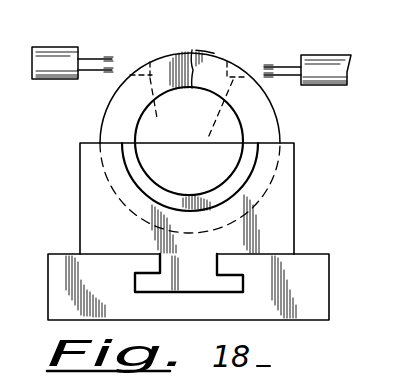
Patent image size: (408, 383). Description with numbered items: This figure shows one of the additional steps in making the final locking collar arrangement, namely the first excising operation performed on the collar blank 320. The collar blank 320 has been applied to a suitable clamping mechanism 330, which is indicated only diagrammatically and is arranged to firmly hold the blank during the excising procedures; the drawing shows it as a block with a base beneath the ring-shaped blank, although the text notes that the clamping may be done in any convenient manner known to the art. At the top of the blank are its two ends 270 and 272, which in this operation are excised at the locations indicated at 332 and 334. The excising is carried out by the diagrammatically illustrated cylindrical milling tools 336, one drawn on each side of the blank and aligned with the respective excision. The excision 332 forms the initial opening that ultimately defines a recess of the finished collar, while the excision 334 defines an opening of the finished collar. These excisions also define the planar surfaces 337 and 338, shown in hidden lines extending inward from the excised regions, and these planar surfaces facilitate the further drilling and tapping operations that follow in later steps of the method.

The end 270 is at (207, 60).
The end 272 is at (172, 58).
The collar blank 320 is at (285, 128).
The clamping mechanism 330 is at (305, 211).
The excision 332 is at (245, 62).
The excision 334 is at (133, 62).
The cylindrical milling tool 336 is at (91, 80).
The planar surface 337 is at (210, 121).
The planar surface 338 is at (168, 110).